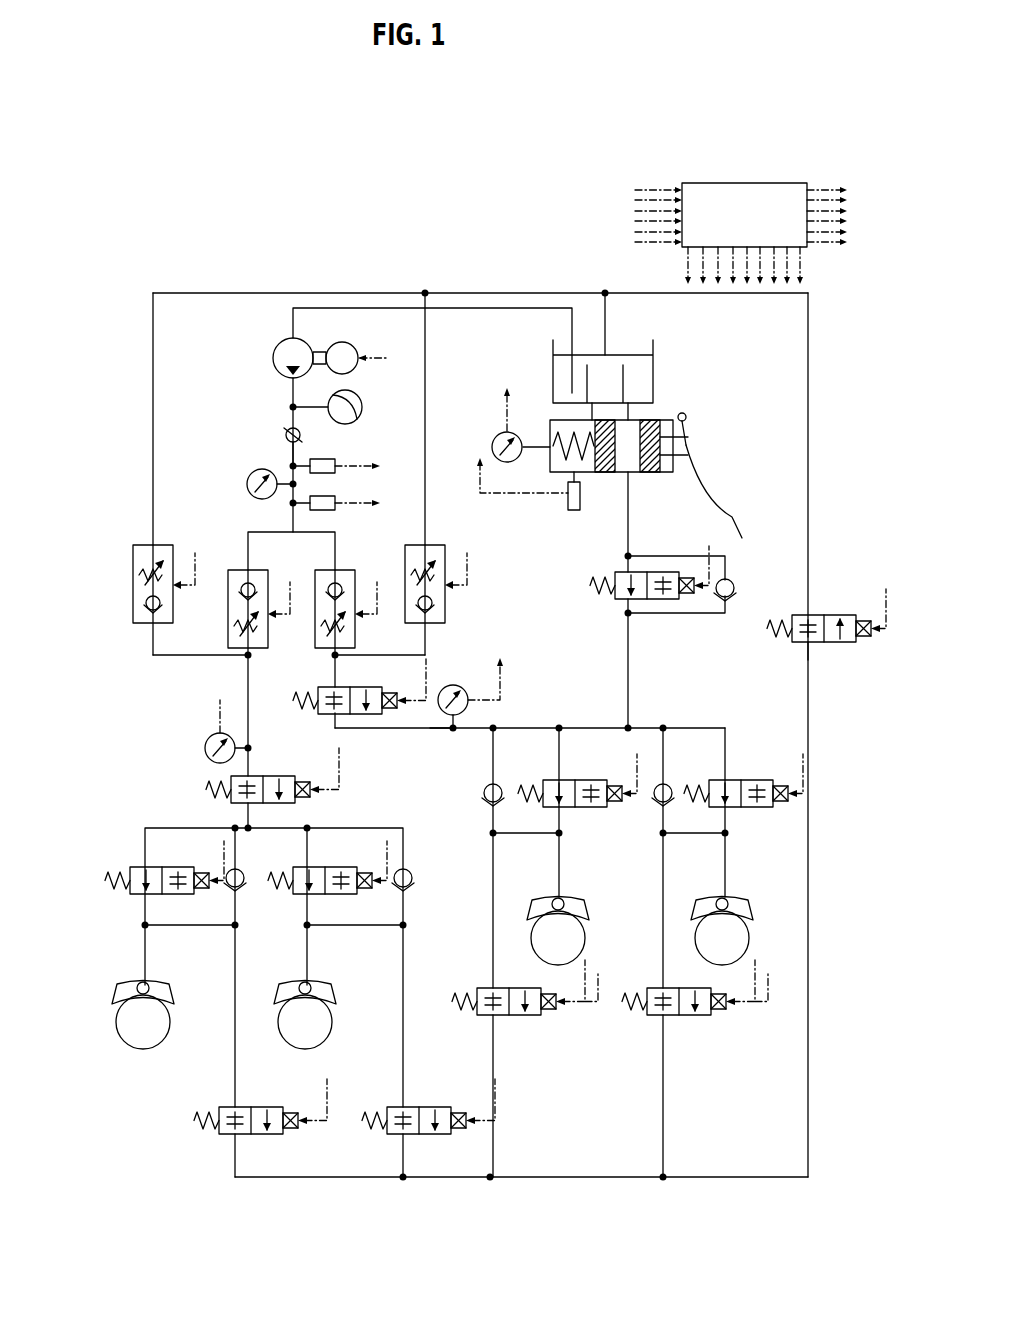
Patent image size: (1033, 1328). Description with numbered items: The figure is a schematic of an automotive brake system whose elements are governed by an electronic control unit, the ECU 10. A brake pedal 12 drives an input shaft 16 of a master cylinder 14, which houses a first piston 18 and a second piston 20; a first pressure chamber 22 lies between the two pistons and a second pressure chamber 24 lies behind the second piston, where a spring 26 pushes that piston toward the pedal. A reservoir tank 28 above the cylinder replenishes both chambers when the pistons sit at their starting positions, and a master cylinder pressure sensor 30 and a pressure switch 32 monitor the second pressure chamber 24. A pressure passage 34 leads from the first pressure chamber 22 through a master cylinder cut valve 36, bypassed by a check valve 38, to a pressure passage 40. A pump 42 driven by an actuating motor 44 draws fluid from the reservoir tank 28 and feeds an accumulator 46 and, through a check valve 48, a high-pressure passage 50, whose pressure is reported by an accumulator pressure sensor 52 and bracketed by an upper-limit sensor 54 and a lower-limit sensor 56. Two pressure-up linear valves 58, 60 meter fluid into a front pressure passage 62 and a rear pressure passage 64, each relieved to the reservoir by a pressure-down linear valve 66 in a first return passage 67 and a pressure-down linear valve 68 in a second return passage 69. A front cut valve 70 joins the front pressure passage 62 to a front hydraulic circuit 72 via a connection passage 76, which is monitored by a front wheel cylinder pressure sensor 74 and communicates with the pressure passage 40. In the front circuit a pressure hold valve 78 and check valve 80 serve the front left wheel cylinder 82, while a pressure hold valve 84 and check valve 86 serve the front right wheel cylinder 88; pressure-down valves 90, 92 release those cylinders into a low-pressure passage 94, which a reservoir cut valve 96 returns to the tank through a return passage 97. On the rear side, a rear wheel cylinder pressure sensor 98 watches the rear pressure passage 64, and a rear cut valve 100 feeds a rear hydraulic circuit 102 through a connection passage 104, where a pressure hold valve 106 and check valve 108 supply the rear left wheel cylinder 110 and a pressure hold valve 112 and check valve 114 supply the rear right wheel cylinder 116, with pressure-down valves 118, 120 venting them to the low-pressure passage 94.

The electronic control unit (ECU) 10 is at (718, 181).
The brake pedal 12 is at (735, 500).
The master cylinder 14 is at (663, 421).
The input shaft 16 is at (690, 437).
The first piston 18 is at (670, 468).
The second piston 20 is at (594, 472).
The first pressure chamber 22 is at (636, 472).
The second pressure chamber 24 is at (548, 465).
The spring 26 is at (562, 426).
The reservoir tank 28 is at (653, 361).
The master cylinder pressure sensor (Pmc sensor) 30 is at (496, 434).
The pressure switch 32 is at (572, 512).
The pressure passage 34 is at (630, 524).
The master cylinder cut valve (MCV) 36 is at (618, 598).
The check valve 38 is at (733, 584).
The pressure passage 40 is at (630, 656).
The pump 42 is at (275, 352).
The actuating motor 44 is at (353, 345).
The accumulator 46 is at (365, 407).
The check valve 48 is at (286, 426).
The high-pressure passage 50 is at (289, 454).
The accumulator pressure sensor (Pacc sensor) 52 is at (247, 484).
The upper-limit sensor 54 is at (344, 457).
The lower-limit sensor 56 is at (344, 503).
The pressure-up linear valve 58 is at (355, 572).
The pressure-up linear valve 60 is at (269, 586).
The front pressure passage 62 is at (333, 674).
The rear pressure passage 64 is at (245, 681).
The pressure-down linear valve 66 is at (432, 545).
The first return passage 67 is at (426, 347).
The pressure-down linear valve 68 is at (168, 550).
The second return passage 69 is at (153, 340).
The front cut valve (FCV) 70 is at (329, 714).
The front hydraulic circuit 72 is at (528, 729).
The front wheel cylinder pressure sensor (Pf sensor) 74 is at (455, 688).
The connection passage 76 is at (439, 730).
The pressure hold valve 78 is at (740, 782).
The check valve 80 is at (670, 800).
The wheel cylinder 82 is at (737, 896).
The pressure hold valve 84 is at (566, 790).
The check valve 86 is at (500, 800).
The wheel cylinder 88 is at (570, 896).
The pressure-down valve 90 is at (684, 1016).
The pressure-down valve 92 is at (520, 1016).
The low-pressure passage 94 is at (558, 1180).
The reservoir cut valve (RVCV) 96 is at (826, 615).
The return passage 97 is at (810, 345).
The rear wheel cylinder pressure sensor (Pr sensor) 98 is at (210, 742).
The rear cut valve (RCV) 100 is at (296, 772).
The rear hydraulic circuit 102 is at (163, 828).
The connection passage 104 is at (345, 828).
The pressure hold valve 106 is at (306, 876).
The check valve 108 is at (409, 878).
The wheel cylinder 110 is at (325, 990).
The pressure hold valve 112 is at (145, 876).
The check valve 114 is at (237, 878).
The wheel cylinder 116 is at (158, 984).
The pressure-down valve 118 is at (423, 1107).
The pressure-down valve 120 is at (256, 1107).